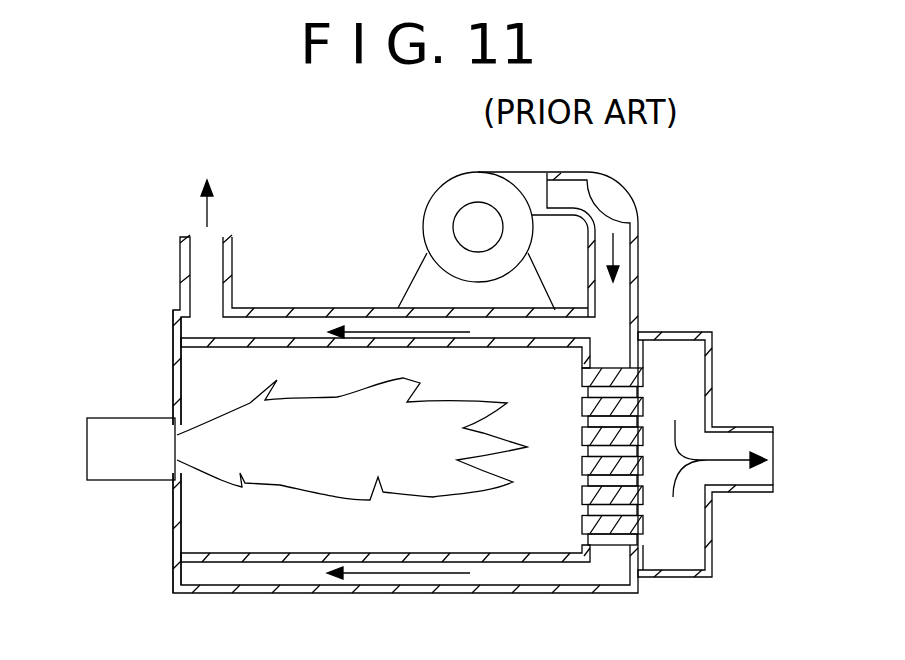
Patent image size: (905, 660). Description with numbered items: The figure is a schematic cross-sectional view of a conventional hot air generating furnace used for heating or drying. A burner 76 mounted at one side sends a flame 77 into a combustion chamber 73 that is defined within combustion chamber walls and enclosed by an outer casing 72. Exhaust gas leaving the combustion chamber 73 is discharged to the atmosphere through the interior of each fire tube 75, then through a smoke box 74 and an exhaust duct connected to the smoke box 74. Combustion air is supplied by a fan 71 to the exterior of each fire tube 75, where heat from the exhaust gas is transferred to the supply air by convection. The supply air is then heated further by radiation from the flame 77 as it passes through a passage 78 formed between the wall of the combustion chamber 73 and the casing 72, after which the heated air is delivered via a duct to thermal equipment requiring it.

The fan 71 is at (427, 205).
The casing 72 is at (450, 593).
The combustion chamber 73 is at (525, 563).
The smoke box 74 is at (712, 347).
The fire tubes 75 is at (632, 410).
The burner 76 is at (135, 430).
The flame 77 is at (277, 500).
The passage 78 is at (400, 578).